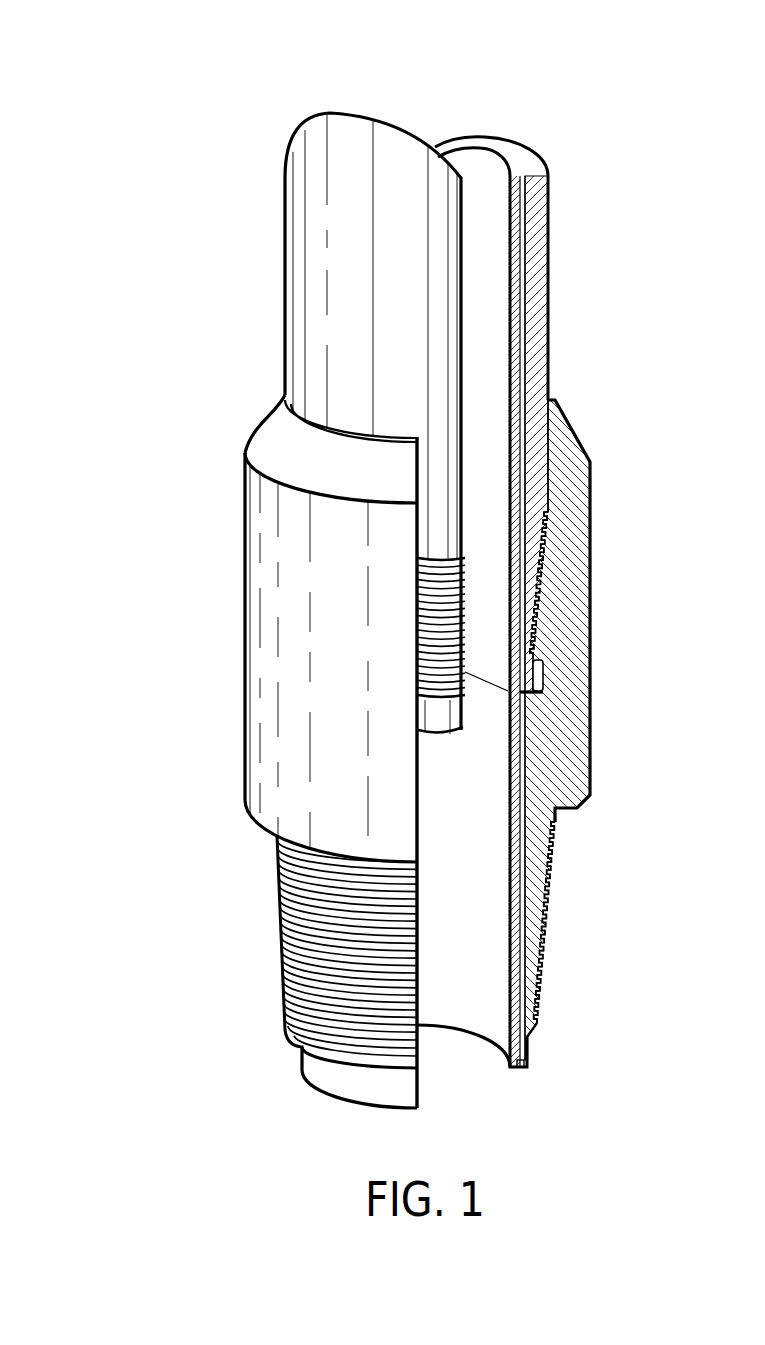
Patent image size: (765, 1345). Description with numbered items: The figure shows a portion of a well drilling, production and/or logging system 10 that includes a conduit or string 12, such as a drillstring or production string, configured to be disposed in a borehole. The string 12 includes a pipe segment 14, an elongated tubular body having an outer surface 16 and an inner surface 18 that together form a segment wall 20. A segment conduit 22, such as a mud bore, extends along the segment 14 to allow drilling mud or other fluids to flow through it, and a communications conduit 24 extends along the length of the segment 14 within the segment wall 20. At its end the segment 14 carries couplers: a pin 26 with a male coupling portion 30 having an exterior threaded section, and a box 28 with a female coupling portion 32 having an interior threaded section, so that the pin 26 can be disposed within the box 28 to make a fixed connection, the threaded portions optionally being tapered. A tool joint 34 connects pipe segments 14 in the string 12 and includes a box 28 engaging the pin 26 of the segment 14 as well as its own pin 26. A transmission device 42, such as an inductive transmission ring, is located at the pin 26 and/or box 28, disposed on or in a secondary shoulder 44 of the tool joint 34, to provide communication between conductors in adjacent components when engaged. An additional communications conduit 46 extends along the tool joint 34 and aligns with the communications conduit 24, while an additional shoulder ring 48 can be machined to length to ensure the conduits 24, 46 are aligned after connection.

The well drilling, production and/or logging system 10 is at (147, 138).
The string 12 is at (223, 562).
The pipe segment 14 is at (300, 263).
The outer surface 16 is at (548, 210).
The inner surface 18 is at (482, 163).
The segment wall 20 is at (535, 190).
The segment conduit 22 is at (493, 335).
The communications conduit 24 is at (520, 383).
The pin 26 is at (533, 465).
The box 28 is at (572, 540).
The male coupling portion 30 is at (532, 568).
The female coupling portion 32 is at (537, 632).
The tool joint 34 is at (290, 780).
The transmission device 42 is at (508, 690).
The secondary shoulder 44 is at (528, 692).
The additional communications conduit 46 is at (522, 903).
The additional shoulder ring 48 is at (543, 680).